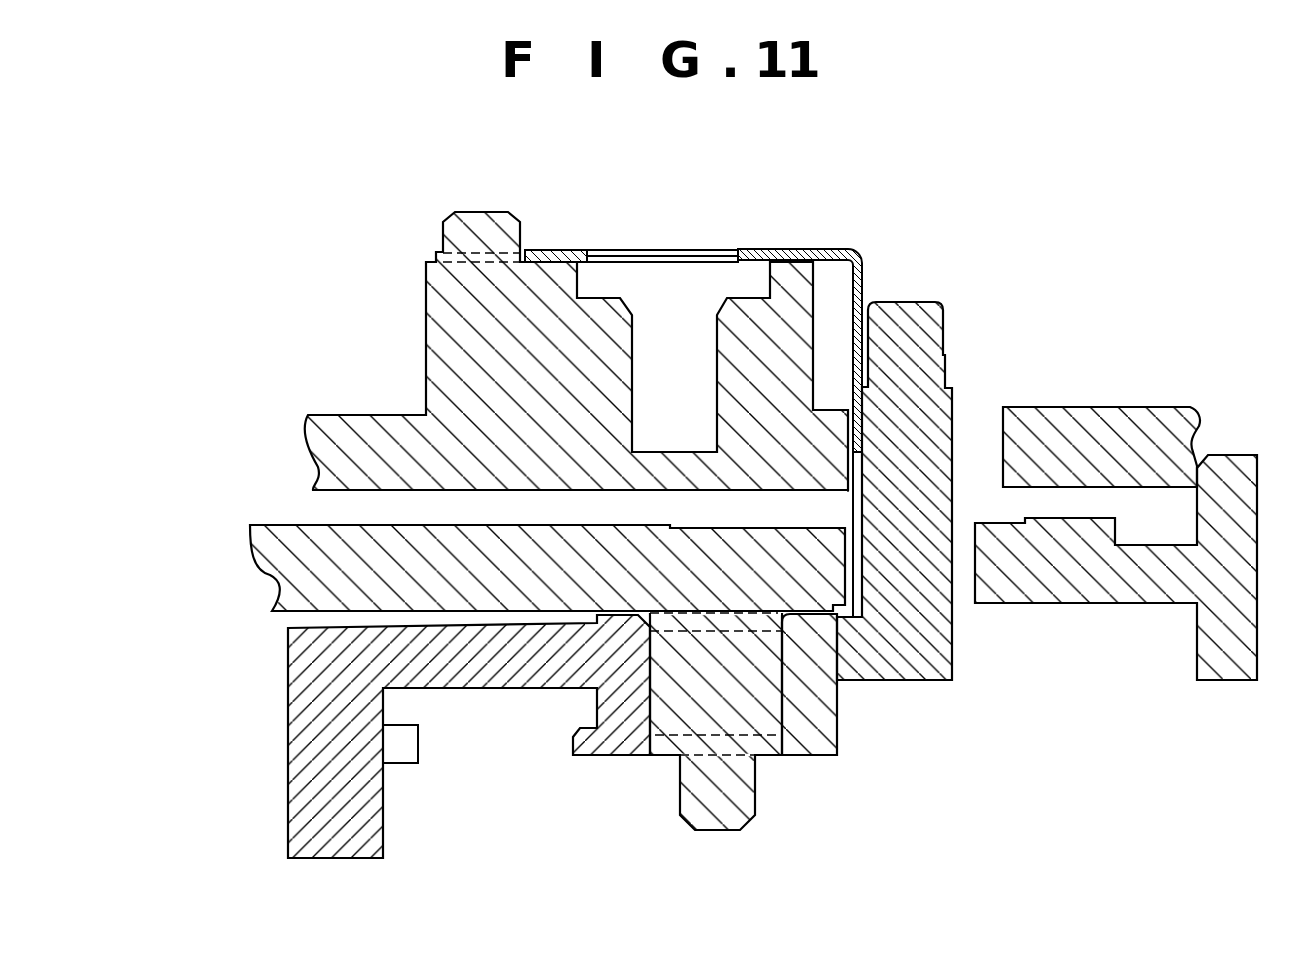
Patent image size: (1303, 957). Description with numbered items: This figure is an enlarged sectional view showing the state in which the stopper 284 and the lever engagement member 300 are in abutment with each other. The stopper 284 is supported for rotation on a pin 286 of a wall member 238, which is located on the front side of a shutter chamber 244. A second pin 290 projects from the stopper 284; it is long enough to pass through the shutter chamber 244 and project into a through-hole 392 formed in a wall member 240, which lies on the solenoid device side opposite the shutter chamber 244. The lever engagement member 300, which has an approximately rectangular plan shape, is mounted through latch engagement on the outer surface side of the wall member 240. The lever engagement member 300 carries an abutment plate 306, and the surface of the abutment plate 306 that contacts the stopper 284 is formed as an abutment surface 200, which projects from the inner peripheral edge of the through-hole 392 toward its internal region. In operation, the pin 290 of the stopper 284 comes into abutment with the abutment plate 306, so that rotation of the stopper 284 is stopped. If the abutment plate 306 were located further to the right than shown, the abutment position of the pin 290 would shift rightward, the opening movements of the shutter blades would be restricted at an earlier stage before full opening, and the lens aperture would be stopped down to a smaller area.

The abutment surface 200 is at (863, 298).
The wall member 238 is at (285, 572).
The wall member 240 is at (318, 440).
The shutter chamber 244 is at (390, 512).
The stopper 284 is at (495, 704).
The pin 286 is at (765, 737).
The pin 290 is at (945, 352).
The lever engagement member 300 is at (778, 238).
The abutment plate 306 is at (858, 270).
The through-hole 392 is at (1001, 428).